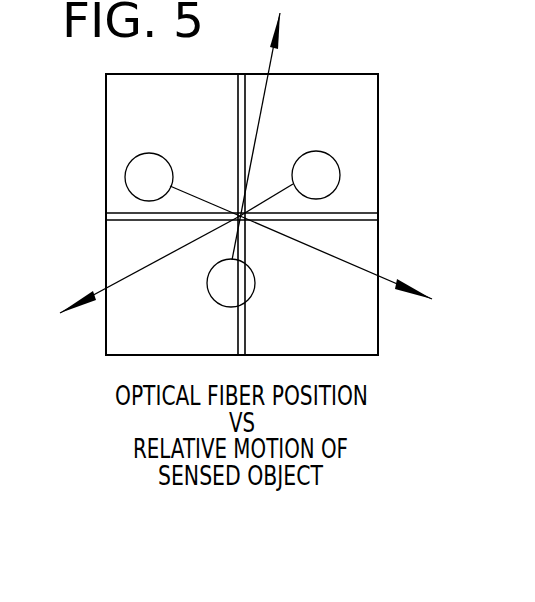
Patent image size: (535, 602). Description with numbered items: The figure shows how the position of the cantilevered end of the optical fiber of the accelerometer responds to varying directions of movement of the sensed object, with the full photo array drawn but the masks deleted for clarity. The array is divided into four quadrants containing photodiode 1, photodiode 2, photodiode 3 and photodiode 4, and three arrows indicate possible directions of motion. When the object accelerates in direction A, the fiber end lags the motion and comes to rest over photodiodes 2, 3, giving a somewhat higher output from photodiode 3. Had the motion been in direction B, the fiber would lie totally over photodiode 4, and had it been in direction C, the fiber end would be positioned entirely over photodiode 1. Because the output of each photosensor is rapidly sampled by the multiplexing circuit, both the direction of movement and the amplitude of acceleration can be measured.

The photodiode 1 is at (309, 145).
The photodiode 2 is at (292, 287).
The photodiode 3 is at (172, 287).
The photodiode 4 is at (173, 145).
The direction A is at (263, 130).
The direction B is at (351, 270).
The direction C is at (138, 278).